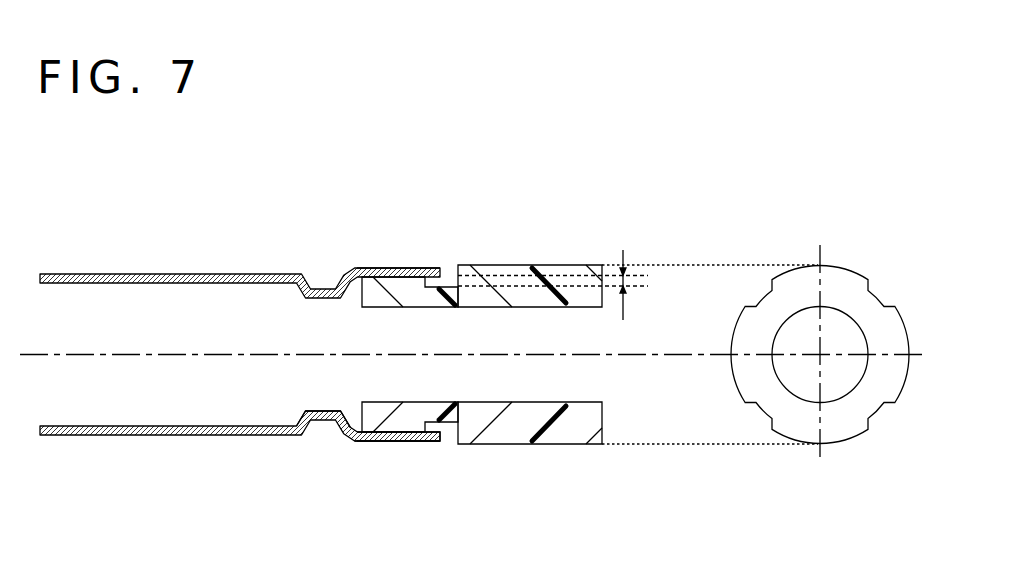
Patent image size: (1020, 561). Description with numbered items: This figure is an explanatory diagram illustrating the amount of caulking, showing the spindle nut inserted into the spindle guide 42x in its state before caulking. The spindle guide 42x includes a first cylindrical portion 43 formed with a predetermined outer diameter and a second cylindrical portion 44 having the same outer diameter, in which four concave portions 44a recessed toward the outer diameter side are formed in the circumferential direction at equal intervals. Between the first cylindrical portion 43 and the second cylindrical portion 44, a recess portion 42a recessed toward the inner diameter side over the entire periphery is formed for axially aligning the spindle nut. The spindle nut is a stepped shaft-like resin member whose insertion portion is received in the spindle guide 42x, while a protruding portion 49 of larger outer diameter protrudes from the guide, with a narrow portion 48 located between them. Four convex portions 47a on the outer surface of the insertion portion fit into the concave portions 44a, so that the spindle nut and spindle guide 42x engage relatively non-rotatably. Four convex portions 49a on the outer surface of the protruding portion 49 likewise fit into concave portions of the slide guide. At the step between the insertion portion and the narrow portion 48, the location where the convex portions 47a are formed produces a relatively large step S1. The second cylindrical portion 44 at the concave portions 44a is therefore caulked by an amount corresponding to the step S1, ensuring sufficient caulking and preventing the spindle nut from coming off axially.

The spindle guide before caulking 42x is at (319, 266).
The convex portions 47a is at (412, 271).
The convex portions 49a is at (557, 265).
The protruding portion 49 is at (782, 307).
The step S1 is at (642, 285).
The first cylindrical portion 43 is at (157, 436).
The recess portion 42a is at (312, 421).
The second cylindrical portion 44 is at (358, 434).
The concave portions 44a is at (379, 438).
The narrow portion 48 is at (447, 423).